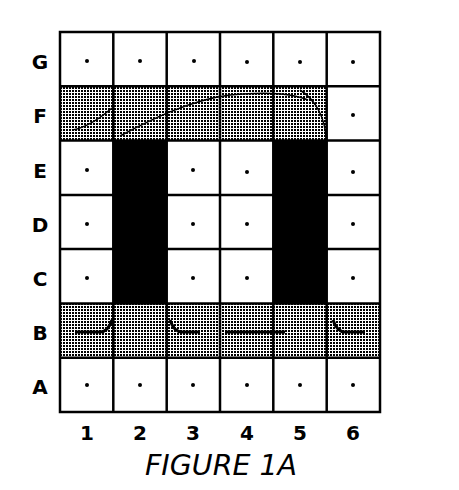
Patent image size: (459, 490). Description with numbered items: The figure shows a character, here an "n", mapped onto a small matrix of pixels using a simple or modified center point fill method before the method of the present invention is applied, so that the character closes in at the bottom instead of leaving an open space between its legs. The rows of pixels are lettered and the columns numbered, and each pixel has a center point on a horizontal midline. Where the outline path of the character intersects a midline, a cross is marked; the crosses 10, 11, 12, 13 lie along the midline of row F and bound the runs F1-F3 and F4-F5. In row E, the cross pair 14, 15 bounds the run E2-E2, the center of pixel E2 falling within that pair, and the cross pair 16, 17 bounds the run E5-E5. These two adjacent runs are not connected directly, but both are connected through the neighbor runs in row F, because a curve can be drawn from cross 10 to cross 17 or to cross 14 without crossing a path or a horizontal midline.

The cross 10 is at (303, 98).
The cross 11 is at (230, 112).
The cross 12 is at (172, 110).
The cross 13 is at (100, 125).
The cross 14 is at (113, 167).
The cross 15 is at (167, 170).
The cross 16 is at (272, 170).
The cross 17 is at (327, 172).